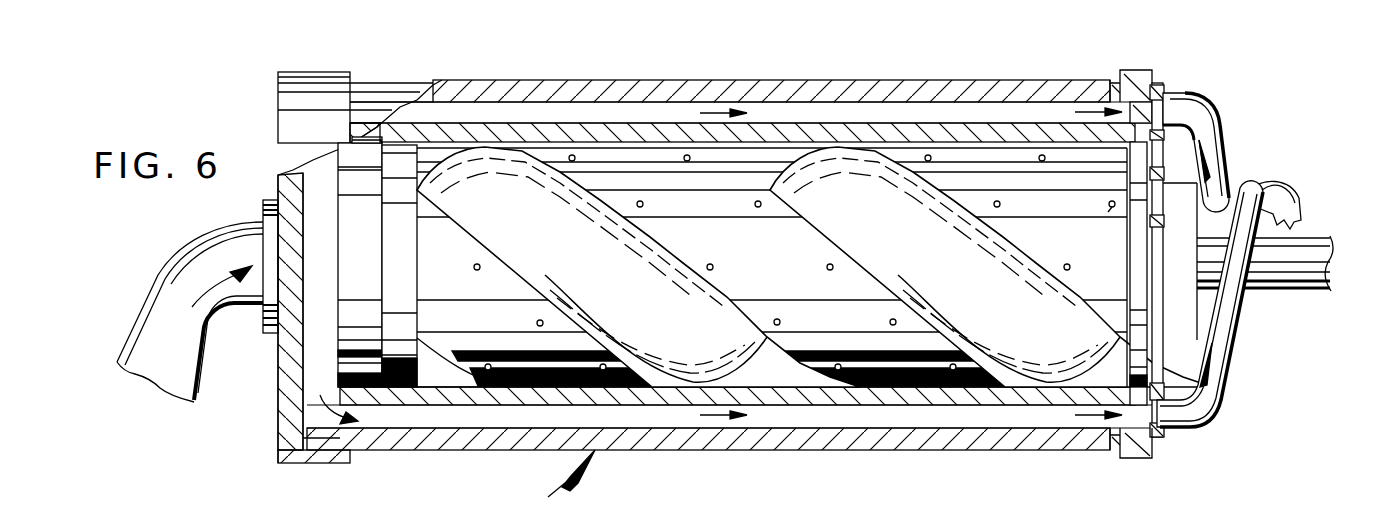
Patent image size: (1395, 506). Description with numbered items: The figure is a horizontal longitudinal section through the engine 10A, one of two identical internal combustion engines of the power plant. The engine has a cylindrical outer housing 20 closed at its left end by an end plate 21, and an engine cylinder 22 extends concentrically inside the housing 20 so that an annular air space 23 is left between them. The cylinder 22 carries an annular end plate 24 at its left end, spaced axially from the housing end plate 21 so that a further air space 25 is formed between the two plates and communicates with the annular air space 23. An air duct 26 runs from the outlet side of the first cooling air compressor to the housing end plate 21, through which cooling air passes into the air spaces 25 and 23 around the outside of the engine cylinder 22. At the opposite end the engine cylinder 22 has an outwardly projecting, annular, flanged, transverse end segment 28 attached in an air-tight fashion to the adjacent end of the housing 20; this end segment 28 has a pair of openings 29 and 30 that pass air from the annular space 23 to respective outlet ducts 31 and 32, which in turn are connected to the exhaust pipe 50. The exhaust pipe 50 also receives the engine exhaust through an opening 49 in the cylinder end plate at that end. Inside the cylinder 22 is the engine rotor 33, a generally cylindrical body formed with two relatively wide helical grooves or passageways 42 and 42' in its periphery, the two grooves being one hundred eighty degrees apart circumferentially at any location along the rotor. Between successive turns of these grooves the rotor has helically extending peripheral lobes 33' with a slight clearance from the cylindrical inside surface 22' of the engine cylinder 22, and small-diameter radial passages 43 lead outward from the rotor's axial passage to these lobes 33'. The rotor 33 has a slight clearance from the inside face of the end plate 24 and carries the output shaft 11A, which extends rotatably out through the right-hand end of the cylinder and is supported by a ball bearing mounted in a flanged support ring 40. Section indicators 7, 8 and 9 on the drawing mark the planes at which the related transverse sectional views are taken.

The section line 7- 7 is at (148, 267).
The section line 8- 8 is at (427, 58).
The section line 9- 9 is at (1103, 47).
The engine 10A is at (547, 478).
The output shaft 11A is at (1292, 290).
The cylindrical outer housing 20 is at (565, 82).
The end plate 21 is at (278, 364).
The engine cylinder 22 is at (737, 274).
The cylindrical inside surface 22' is at (772, 238).
The annular air space 23 is at (870, 112).
The annular end plate 24 is at (352, 265).
The air space 25 is at (320, 365).
The air duct 26 is at (142, 340).
The flanged transverse end segment 28 is at (1148, 75).
The opening 29 is at (1145, 112).
The opening 30 is at (1142, 417).
The outlet duct 31 is at (1220, 136).
The outlet duct 32 is at (1230, 352).
The engine rotor 33 is at (772, 94).
The peripheral lobes 33' is at (772, 446).
The flanged support ring 40 is at (1187, 279).
The helical groove 42 is at (638, 213).
The helical groove 42' is at (981, 211).
The radial passages 43 is at (643, 204).
The opening 49 is at (1104, 217).
The exhaust pipe 50 is at (1283, 190).